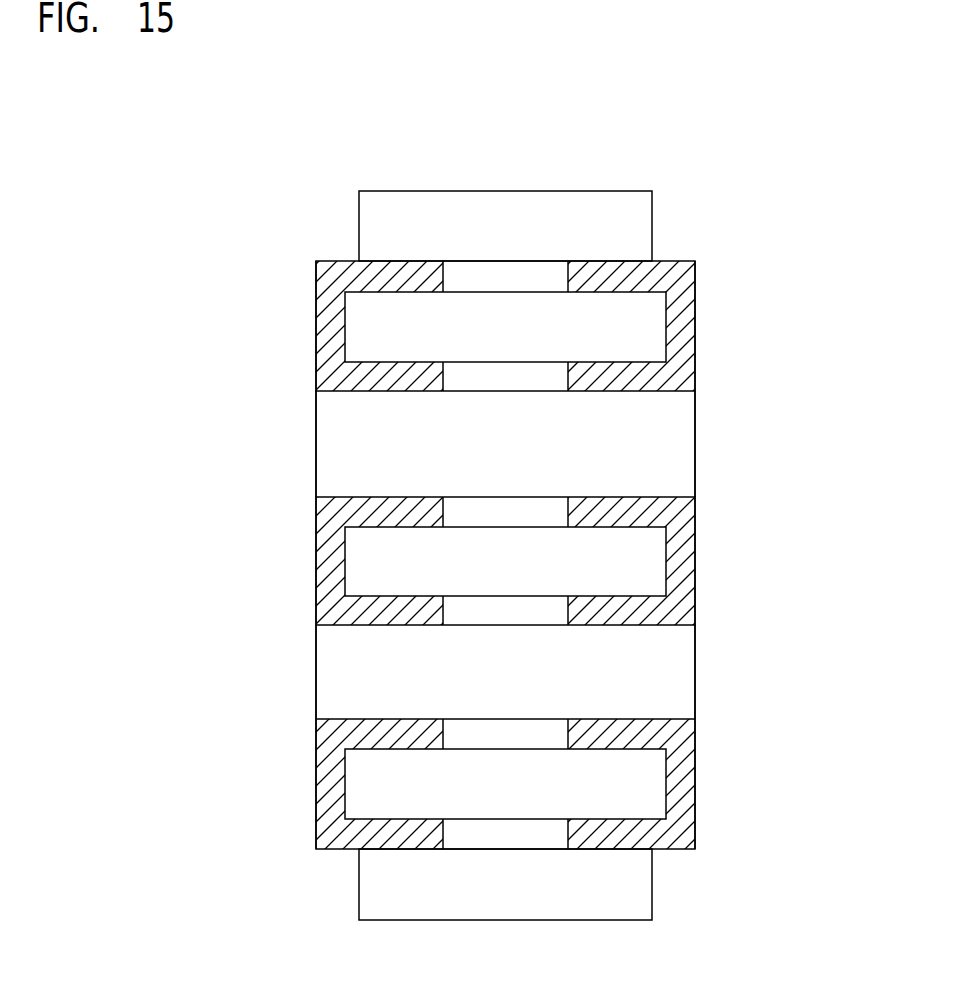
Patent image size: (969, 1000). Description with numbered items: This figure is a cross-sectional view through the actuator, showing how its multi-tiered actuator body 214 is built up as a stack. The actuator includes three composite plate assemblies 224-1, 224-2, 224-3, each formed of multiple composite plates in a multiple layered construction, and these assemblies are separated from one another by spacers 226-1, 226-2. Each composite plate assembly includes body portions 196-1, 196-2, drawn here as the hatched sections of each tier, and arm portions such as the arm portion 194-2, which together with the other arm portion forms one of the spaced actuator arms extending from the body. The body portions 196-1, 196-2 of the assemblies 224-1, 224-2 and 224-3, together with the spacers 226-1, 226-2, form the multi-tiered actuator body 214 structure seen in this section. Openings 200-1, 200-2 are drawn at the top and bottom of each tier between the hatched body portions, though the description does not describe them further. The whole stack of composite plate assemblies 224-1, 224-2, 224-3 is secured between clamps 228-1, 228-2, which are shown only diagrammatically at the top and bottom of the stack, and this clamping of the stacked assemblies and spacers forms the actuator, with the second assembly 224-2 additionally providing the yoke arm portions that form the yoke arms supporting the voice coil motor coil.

The actuator body 214 is at (664, 248).
The arm portion 194-2 is at (667, 1).
The body portion 196-1 is at (667, 277).
The body portion 196-2 is at (650, 377).
The first opening 200-1 is at (443, 268).
The second opening 200-2 is at (443, 383).
The composite plate assembly 224-1 is at (302, 321).
The composite plate assembly 224-2 is at (301, 548).
The composite plate assembly 224-3 is at (303, 799).
The spacer 226-1 is at (315, 435).
The spacer 226-2 is at (315, 653).
The clamp 228-1 is at (360, 190).
The clamp 228-2 is at (360, 920).